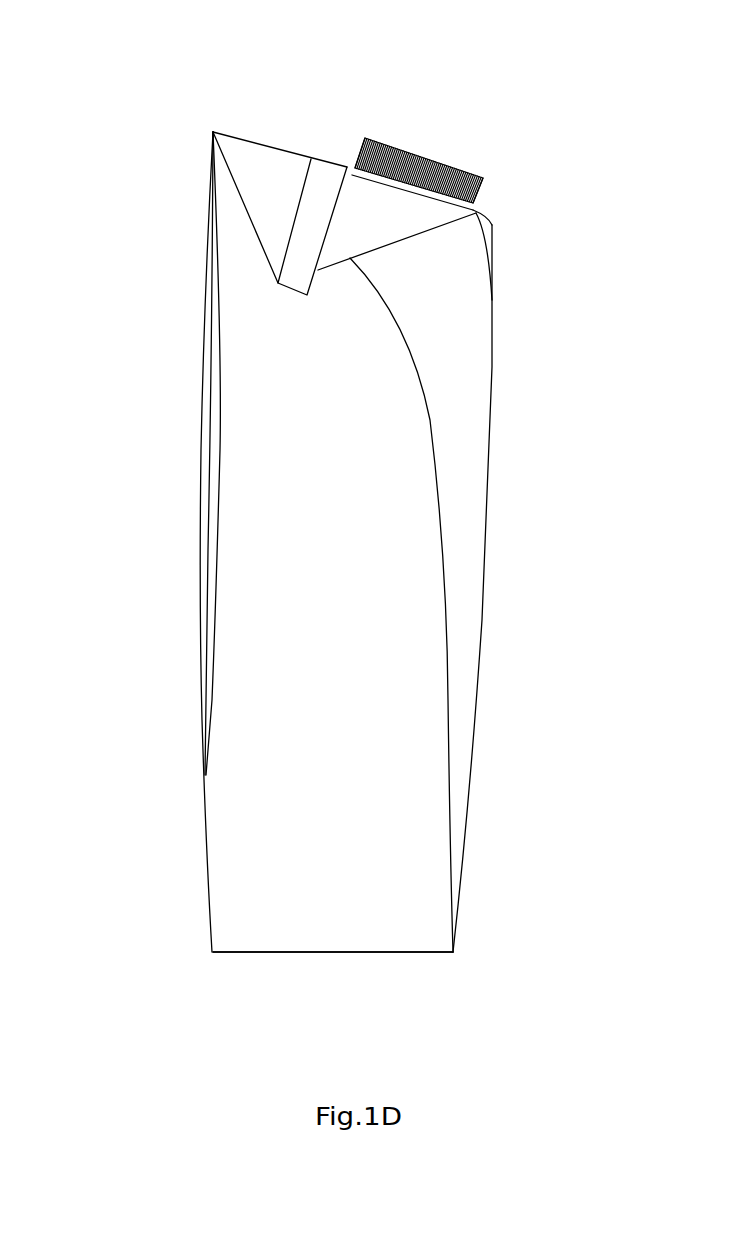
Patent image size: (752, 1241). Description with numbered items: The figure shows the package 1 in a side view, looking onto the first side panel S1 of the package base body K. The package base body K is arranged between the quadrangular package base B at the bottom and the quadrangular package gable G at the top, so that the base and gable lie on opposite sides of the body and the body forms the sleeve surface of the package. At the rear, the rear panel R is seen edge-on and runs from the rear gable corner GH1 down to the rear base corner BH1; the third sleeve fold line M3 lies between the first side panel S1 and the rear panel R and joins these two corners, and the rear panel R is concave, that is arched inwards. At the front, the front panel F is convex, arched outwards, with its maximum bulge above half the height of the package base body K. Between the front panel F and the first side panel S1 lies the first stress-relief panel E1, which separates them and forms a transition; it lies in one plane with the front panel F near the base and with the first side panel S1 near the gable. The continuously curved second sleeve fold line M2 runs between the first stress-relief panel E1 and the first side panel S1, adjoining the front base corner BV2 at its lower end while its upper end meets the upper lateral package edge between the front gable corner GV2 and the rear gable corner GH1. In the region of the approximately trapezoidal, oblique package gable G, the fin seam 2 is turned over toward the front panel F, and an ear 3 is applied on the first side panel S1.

The package 1 is at (583, 108).
The rear gable corner GH1 is at (213, 132).
The package gable G is at (300, 142).
The ear 3 is at (267, 193).
The fin seam 2 is at (303, 261).
The front gable corner GV2 is at (492, 225).
The first stress-relief panel E1 is at (458, 323).
The second sleeve fold line M2 is at (428, 420).
The third sleeve fold line M3 is at (222, 420).
The package base body K is at (123, 487).
The rear panel R is at (182, 573).
The front panel F is at (503, 572).
The first side panel S1 is at (352, 595).
The rear base corner BH1 is at (212, 952).
The front base corner BV2 is at (453, 952).
The package base B is at (330, 963).